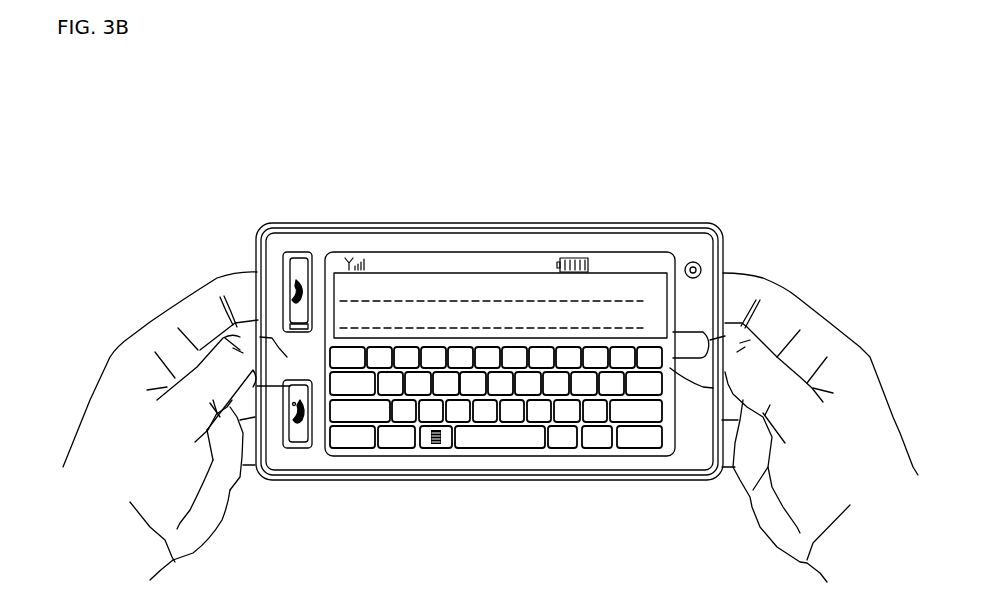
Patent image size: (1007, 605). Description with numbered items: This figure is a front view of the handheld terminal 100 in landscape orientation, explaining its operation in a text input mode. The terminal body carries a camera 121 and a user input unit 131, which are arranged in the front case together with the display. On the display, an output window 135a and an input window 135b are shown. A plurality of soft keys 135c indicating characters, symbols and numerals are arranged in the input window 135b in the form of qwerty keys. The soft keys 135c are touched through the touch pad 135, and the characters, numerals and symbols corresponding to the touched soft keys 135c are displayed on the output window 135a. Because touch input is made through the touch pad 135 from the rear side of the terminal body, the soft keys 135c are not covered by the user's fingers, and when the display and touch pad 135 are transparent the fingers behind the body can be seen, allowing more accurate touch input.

The handheld terminal 100 is at (232, 138).
The user input unit 131 is at (300, 262).
The camera 121 is at (693, 262).
The touch pad 135 is at (537, 253).
The output window 135a is at (447, 283).
The input window 135b is at (436, 450).
The soft keys 135c is at (523, 392).